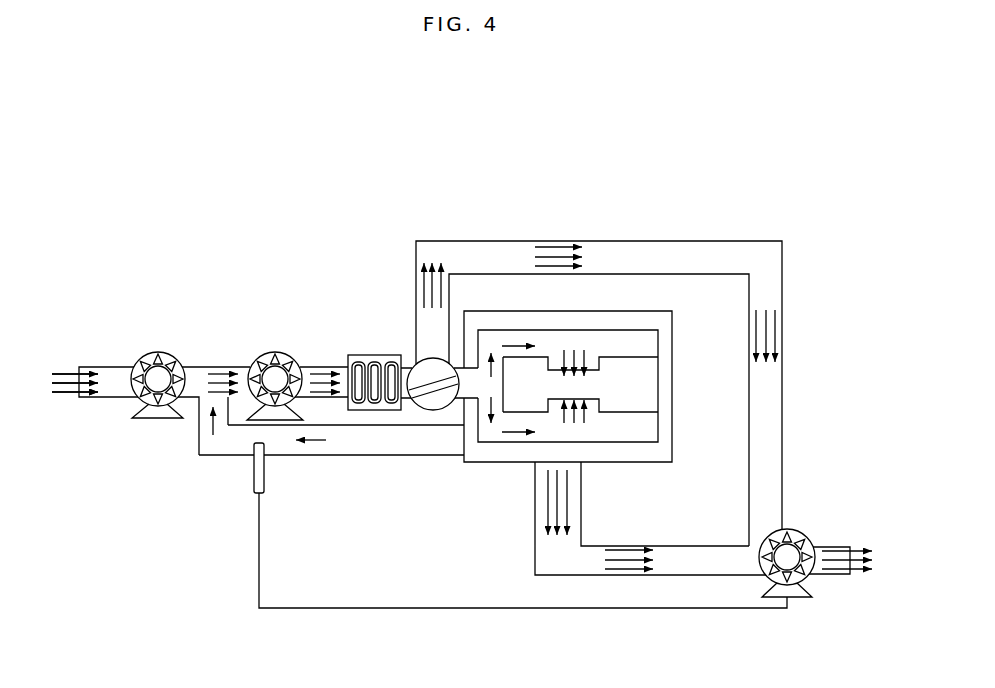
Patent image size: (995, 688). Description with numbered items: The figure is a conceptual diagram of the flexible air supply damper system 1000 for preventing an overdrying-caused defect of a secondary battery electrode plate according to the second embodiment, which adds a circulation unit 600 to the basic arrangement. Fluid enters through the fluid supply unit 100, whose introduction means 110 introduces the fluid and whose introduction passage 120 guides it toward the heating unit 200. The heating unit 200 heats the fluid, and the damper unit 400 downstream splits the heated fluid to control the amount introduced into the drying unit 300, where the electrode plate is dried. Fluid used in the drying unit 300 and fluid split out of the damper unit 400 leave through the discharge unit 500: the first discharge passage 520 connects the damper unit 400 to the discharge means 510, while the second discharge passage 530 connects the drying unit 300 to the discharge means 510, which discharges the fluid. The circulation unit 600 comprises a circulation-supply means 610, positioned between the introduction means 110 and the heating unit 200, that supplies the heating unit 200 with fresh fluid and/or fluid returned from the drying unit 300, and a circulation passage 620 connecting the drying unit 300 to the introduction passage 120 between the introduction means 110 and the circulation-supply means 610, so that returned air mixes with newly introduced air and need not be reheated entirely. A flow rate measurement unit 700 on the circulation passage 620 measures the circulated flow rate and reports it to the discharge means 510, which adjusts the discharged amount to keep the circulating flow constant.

The flexible air supply damper system 1000 is at (805, 158).
The fluid supply unit 100 is at (177, 340).
The introduction means 110 is at (142, 414).
The introduction passage 120 is at (112, 366).
The circulation-supply means 610 is at (273, 351).
The heating unit 200 is at (371, 350).
The damper unit 400 is at (430, 414).
The drying unit 300 is at (678, 396).
The second discharge passage 530 is at (783, 305).
The first discharge passage 520 is at (678, 577).
The discharge unit 500 is at (842, 583).
The discharge means 510 is at (797, 532).
The circulation unit 600 is at (347, 461).
The circulation passage 620 is at (294, 457).
The flow rate measurement unit 700 is at (254, 490).